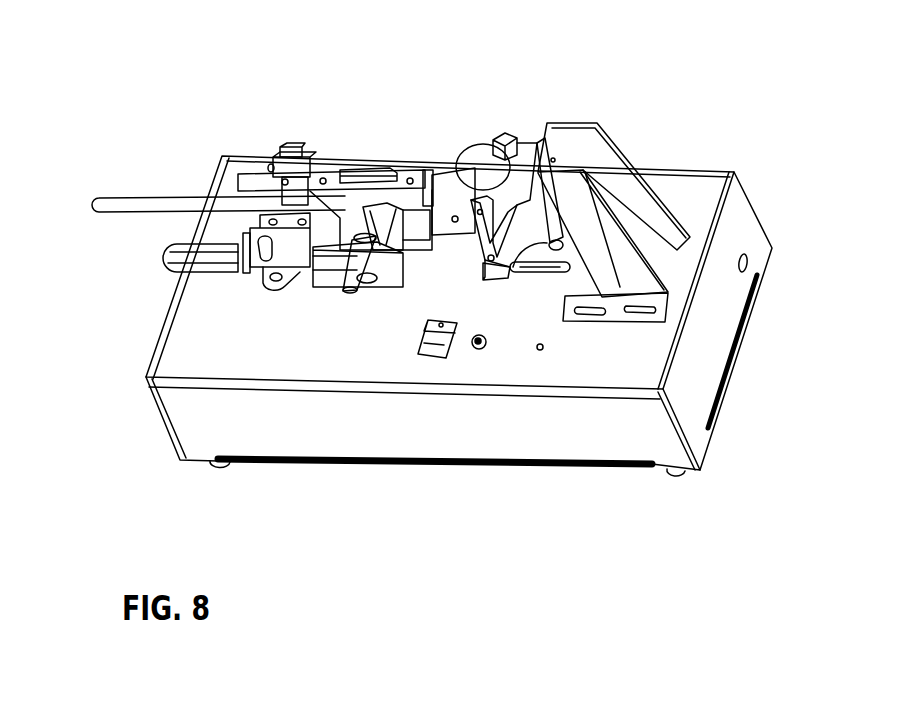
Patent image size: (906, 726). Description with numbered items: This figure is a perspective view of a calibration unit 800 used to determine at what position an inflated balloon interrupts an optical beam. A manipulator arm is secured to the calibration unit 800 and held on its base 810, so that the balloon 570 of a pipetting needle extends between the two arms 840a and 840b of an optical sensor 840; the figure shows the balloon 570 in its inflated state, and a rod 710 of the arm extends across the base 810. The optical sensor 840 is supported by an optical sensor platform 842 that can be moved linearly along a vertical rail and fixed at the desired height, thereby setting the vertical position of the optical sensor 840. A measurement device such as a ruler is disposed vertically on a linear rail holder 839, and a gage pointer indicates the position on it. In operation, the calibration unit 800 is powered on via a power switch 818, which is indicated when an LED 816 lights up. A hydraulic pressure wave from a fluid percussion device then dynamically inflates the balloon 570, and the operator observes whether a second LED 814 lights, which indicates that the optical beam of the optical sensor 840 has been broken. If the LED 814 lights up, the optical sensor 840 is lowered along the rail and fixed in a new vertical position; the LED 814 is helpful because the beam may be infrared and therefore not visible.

The calibration unit 800 is at (209, 108).
The base 810 is at (190, 343).
The rod 710 is at (142, 199).
The balloon 570 is at (478, 155).
The optical sensor 840 is at (510, 272).
The arm of optical sensor 840a is at (485, 233).
The arm of optical sensor 840b is at (502, 137).
The linear rail holder 839 is at (593, 140).
The optical sensor platform 842 is at (549, 305).
The second LED 814 is at (420, 320).
The power switch 818 is at (437, 345).
The LED 816 is at (487, 345).